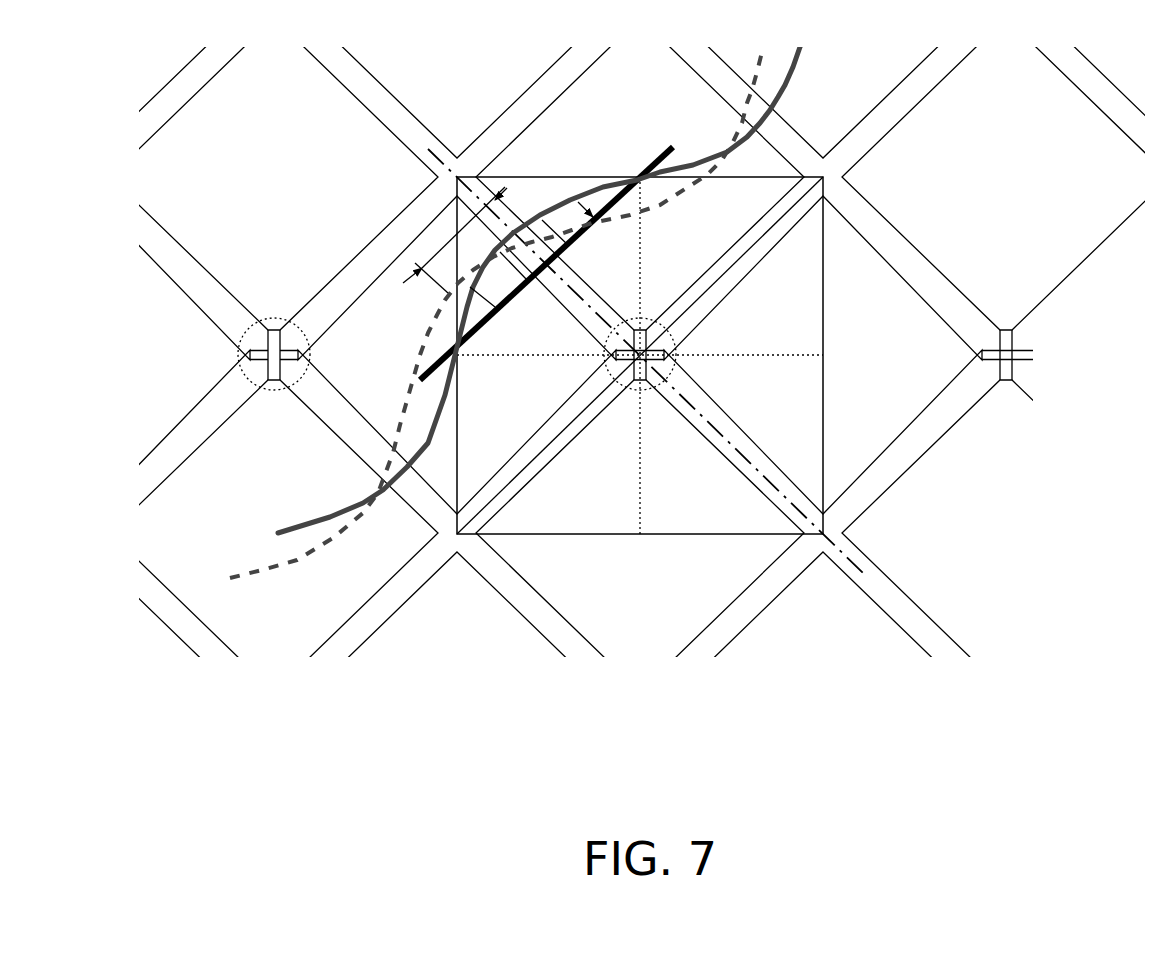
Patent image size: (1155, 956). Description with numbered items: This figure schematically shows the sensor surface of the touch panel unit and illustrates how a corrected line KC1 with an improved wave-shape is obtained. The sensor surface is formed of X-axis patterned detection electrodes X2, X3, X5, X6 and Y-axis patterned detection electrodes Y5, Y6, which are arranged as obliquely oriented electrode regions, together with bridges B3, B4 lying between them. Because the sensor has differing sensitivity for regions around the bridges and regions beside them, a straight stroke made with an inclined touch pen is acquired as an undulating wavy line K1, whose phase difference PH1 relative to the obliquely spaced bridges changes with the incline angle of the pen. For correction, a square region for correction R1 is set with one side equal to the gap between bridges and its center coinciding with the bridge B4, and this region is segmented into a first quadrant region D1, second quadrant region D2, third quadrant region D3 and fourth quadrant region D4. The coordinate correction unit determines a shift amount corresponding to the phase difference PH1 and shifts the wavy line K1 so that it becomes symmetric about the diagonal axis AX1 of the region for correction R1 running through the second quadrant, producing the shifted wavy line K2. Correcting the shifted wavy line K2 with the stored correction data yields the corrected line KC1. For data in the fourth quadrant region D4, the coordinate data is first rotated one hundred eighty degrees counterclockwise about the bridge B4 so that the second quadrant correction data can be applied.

The X-axis patterned detection electrode X2 is at (262, 181).
The X-axis patterned detection electrode X3 is at (262, 434).
The X-axis patterned detection electrode X5 is at (627, 124).
The X-axis patterned detection electrode X6 is at (634, 569).
The Y-axis patterned detection electrode Y5 is at (367, 359).
The Y-axis patterned detection electrode Y6 is at (847, 364).
The first quadrant region D1 is at (729, 341).
The second quadrant region D2 is at (537, 341).
The third quadrant region D3 is at (537, 526).
The fourth quadrant region D4 is at (726, 526).
The bridge B3 is at (302, 326).
The bridge B4 is at (670, 326).
The region for correction R1 is at (823, 452).
The axis AX1 is at (866, 584).
The corrected line KC1 is at (614, 200).
The wavy line K1 is at (297, 560).
The shifted wavy line K2 is at (317, 522).
The phase difference PH1 is at (498, 247).